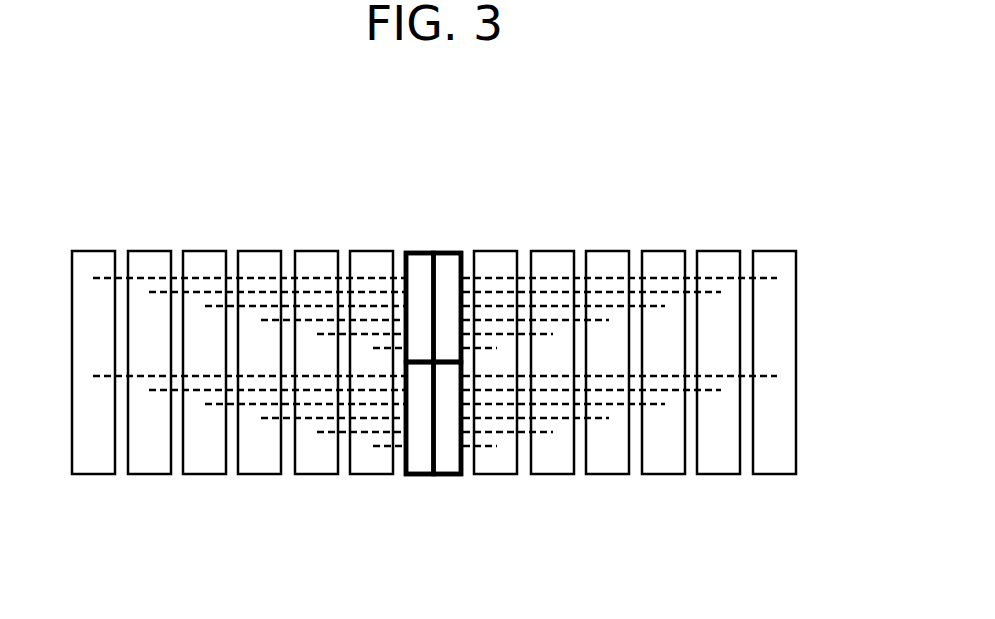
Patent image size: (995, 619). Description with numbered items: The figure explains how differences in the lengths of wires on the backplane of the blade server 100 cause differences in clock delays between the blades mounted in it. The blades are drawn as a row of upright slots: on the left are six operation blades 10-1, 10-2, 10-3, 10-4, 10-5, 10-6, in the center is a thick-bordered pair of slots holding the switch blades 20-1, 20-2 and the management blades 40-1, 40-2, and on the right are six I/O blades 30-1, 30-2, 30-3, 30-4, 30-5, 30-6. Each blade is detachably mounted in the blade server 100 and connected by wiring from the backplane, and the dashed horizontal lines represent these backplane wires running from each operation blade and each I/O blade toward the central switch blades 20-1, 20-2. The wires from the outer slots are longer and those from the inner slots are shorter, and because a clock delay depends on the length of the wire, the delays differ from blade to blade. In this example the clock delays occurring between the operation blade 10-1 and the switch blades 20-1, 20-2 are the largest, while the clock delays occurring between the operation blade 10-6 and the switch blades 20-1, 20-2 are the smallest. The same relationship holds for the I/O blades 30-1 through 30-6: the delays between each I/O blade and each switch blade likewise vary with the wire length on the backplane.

The blade server 100 is at (690, 159).
The operation blade 10-1 is at (100, 266).
The operation blade 10-2 is at (155, 458).
The operation blade 10-3 is at (211, 266).
The operation blade 10-4 is at (266, 458).
The operation blade 10-5 is at (308, 266).
The operation blade 10-6 is at (379, 458).
The switch blade 20-1 is at (419, 266).
The switch blade 20-2 is at (419, 458).
The management blade 40-1 is at (447, 266).
The management blade 40-2 is at (447, 458).
The I/O blade 30-1 is at (503, 266).
The I/O blade 30-2 is at (558, 458).
The I/O blade 30-3 is at (613, 266).
The I/O blade 30-4 is at (670, 458).
The I/O blade 30-5 is at (726, 266).
The I/O blade 30-6 is at (782, 458).